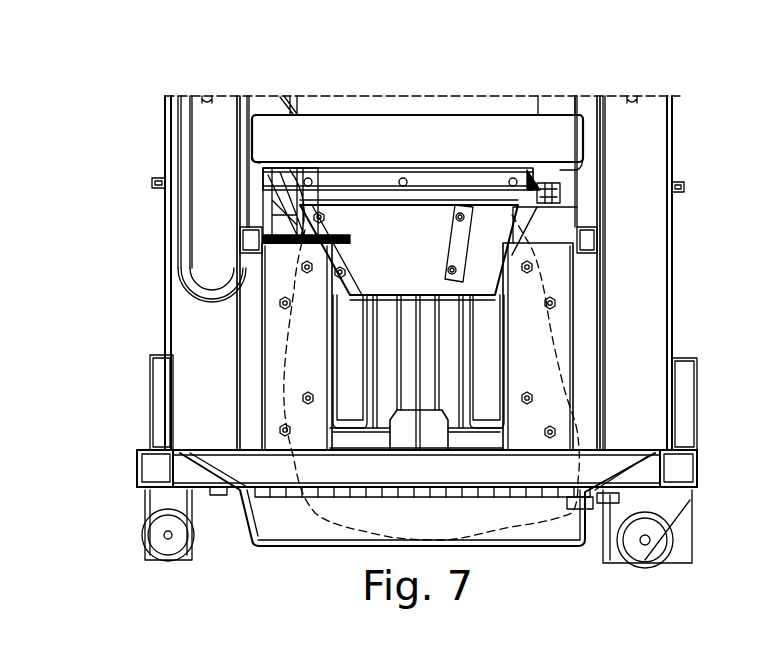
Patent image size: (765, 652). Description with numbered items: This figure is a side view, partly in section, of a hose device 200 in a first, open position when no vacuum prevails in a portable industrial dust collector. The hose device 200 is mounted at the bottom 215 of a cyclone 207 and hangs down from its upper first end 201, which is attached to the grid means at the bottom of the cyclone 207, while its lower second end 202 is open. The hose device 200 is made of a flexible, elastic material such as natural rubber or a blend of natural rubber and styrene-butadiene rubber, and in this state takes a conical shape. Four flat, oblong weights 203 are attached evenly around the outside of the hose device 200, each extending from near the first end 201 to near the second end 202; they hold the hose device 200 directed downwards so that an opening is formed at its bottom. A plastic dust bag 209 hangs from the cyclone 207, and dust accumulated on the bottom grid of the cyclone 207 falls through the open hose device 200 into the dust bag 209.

The hose device 200 is at (370, 268).
The first end 201 is at (340, 163).
The second end 202 is at (363, 296).
The weights 203 is at (330, 230).
The cyclone 207 is at (556, 106).
The dust bag 209 is at (285, 387).
The bottom 215 is at (262, 131).